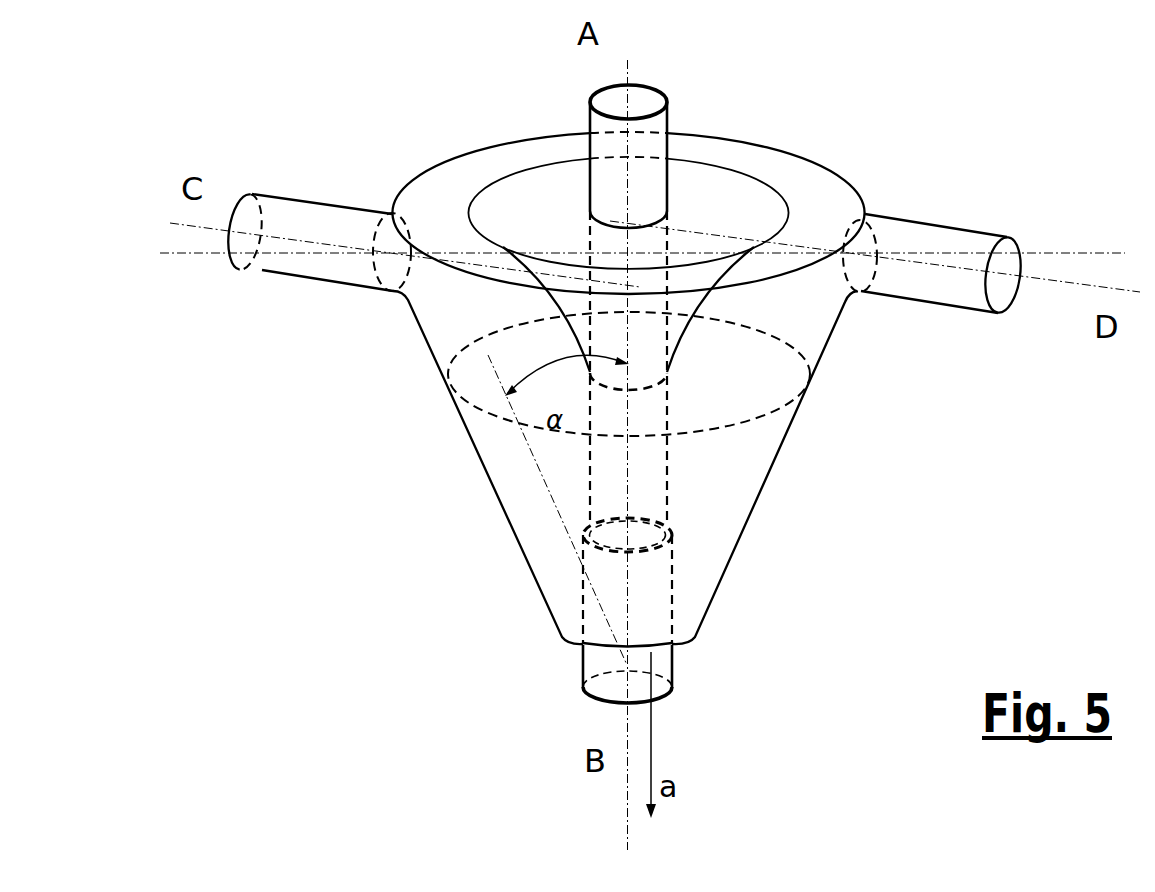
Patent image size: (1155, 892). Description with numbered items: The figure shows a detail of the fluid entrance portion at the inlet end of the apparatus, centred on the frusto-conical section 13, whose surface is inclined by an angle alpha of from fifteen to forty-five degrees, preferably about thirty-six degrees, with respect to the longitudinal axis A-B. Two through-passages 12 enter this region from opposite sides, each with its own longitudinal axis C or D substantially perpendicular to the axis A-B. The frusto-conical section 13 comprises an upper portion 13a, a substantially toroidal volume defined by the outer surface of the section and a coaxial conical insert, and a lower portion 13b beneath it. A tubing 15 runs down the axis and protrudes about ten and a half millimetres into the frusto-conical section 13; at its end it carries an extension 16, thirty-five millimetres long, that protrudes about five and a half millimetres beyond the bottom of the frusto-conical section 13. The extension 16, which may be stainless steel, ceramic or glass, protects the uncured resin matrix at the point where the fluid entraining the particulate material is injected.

The through-passage 12 is at (320, 270).
The frusto-conical section 13 is at (440, 464).
The upper portion 13a is at (808, 340).
The lower portion 13b is at (527, 495).
The tubing 15 is at (668, 185).
The extension 16 is at (596, 660).